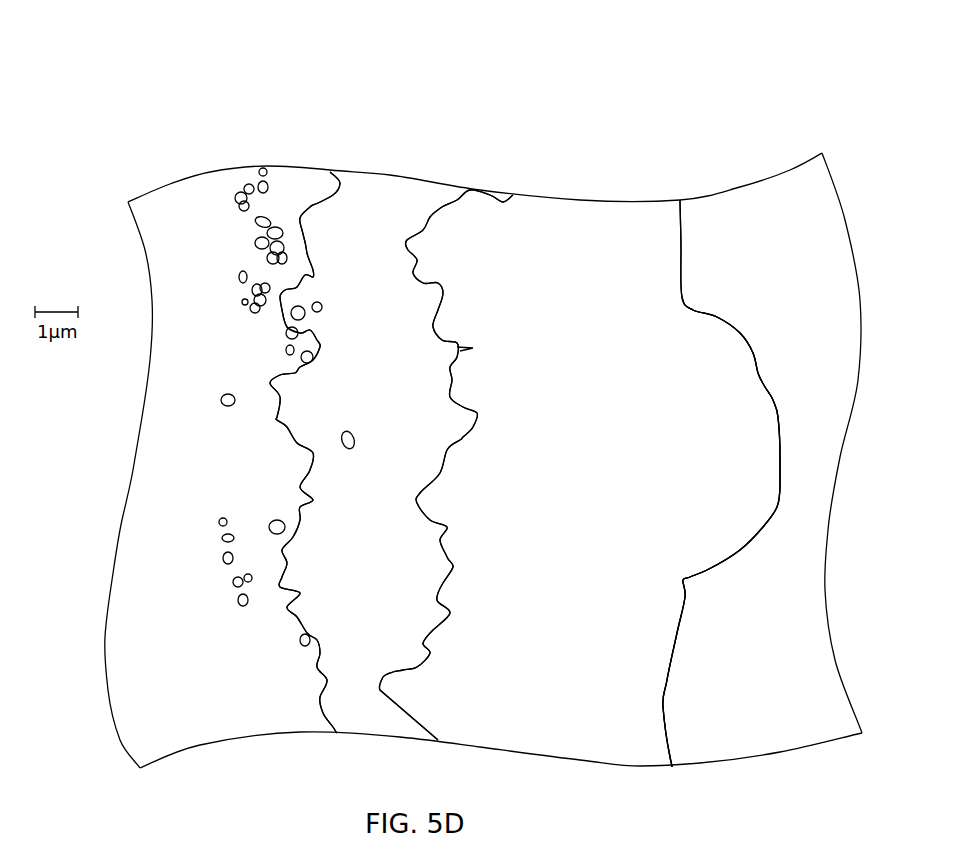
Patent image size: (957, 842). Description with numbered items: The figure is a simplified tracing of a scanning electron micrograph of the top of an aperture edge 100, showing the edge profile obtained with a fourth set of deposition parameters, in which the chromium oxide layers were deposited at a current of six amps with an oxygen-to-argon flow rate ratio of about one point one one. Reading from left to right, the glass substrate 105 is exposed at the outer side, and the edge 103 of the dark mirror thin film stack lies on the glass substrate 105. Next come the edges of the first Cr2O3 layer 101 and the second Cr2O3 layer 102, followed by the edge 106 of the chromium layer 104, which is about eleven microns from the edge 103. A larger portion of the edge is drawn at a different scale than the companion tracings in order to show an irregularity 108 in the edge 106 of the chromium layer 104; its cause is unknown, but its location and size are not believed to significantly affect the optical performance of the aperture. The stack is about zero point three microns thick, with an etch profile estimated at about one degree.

The aperture edge 100 is at (834, 85).
The first Cr2O3 layer 101 is at (398, 390).
The second Cr2O3 layer 102 is at (566, 342).
The edge of the thin film stack 103 is at (303, 510).
The chromium layer 104 is at (835, 368).
The glass substrate 105 is at (216, 365).
The edge of the chromium layer 106 is at (677, 637).
The irregularity 108 is at (660, 448).